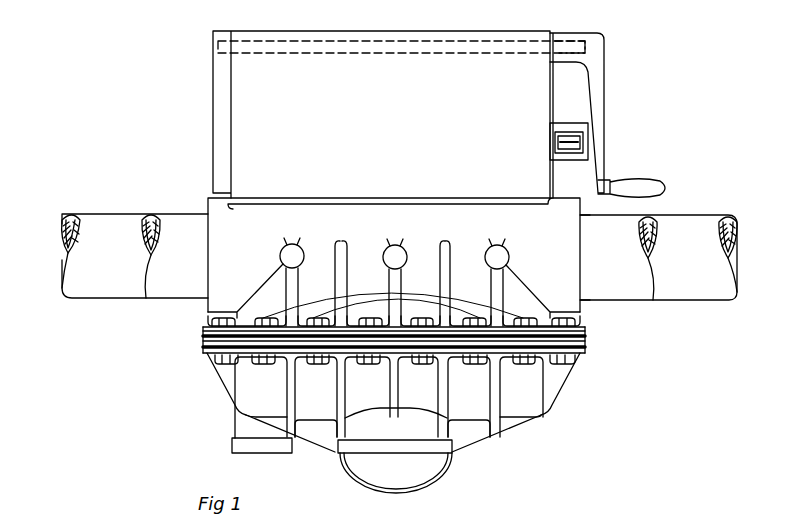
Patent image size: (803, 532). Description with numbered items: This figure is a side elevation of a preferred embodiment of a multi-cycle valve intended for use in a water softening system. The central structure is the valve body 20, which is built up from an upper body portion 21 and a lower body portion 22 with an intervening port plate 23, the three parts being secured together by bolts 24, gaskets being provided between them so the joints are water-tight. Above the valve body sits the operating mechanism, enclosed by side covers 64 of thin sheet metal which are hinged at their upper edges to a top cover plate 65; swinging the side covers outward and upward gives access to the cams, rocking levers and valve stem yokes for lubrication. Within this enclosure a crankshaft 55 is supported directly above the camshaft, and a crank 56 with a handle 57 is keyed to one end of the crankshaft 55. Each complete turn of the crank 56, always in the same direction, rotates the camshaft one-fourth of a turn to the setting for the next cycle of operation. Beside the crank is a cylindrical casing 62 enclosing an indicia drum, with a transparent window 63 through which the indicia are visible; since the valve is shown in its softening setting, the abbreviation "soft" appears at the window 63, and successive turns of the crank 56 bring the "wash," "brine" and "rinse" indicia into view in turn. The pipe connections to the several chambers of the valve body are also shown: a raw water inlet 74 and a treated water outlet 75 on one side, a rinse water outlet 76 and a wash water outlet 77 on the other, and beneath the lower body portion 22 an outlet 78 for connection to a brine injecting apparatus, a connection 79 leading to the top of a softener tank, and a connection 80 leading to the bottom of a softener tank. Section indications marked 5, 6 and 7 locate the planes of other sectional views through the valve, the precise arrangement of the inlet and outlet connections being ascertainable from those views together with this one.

The section line 5- 5 is at (283, 459).
The section line 6- 6 is at (386, 494).
The section line 7- 7 is at (489, 463).
The valve body 20 is at (203, 352).
The upper body portion 21 is at (227, 220).
The lower body portion 22 is at (260, 388).
The port plate 23 is at (207, 343).
The bolts 24 is at (392, 297).
The crankshaft 55 is at (510, 52).
The crank 56 is at (598, 67).
The handle 57 is at (648, 187).
The cylindrical casing 62 is at (572, 122).
The transparent window 63 is at (585, 139).
The side covers 64 is at (381, 114).
The top cover plate 65 is at (501, 32).
The raw water inlet 74 is at (67, 238).
The treated water outlet 75 is at (157, 213).
The rinse water outlet 76 is at (653, 223).
The wash water outlet 77 is at (738, 233).
The outlet 78 is at (250, 445).
The connection 79 is at (413, 473).
The connection 80 is at (380, 428).